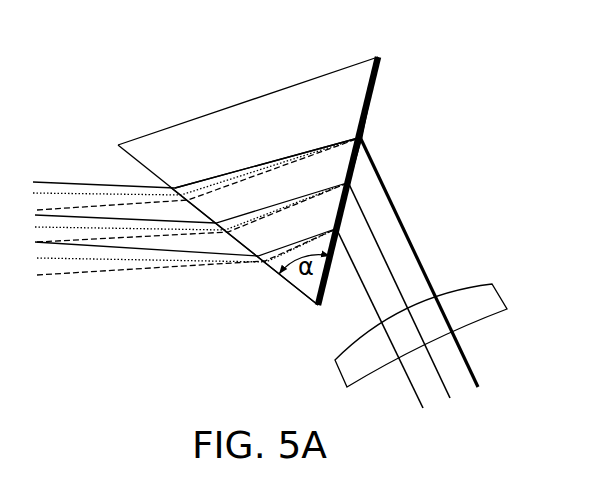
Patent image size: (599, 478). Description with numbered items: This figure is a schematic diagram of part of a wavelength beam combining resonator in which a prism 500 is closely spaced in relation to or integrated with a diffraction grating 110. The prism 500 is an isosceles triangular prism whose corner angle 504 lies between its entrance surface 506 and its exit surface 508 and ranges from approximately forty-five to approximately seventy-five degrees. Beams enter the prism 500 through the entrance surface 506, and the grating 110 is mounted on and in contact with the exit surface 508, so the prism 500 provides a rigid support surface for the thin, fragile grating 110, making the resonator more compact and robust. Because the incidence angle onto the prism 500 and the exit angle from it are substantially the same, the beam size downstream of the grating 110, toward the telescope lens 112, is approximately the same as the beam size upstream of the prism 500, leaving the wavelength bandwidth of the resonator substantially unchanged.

The prism 500 is at (246, 99).
The corner angle α 504 is at (276, 271).
The exit surface 508 is at (366, 87).
The diffraction grating 110 is at (376, 95).
The entrance surface 506 is at (129, 166).
The lens 112 is at (509, 296).